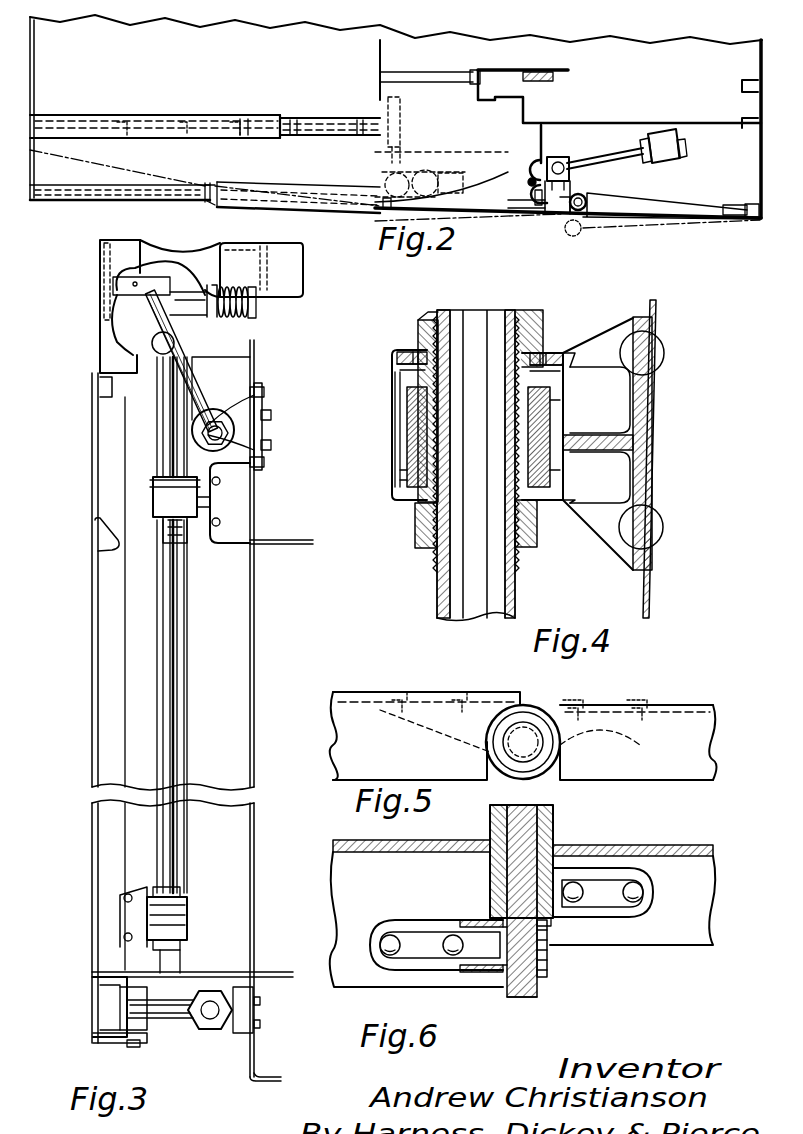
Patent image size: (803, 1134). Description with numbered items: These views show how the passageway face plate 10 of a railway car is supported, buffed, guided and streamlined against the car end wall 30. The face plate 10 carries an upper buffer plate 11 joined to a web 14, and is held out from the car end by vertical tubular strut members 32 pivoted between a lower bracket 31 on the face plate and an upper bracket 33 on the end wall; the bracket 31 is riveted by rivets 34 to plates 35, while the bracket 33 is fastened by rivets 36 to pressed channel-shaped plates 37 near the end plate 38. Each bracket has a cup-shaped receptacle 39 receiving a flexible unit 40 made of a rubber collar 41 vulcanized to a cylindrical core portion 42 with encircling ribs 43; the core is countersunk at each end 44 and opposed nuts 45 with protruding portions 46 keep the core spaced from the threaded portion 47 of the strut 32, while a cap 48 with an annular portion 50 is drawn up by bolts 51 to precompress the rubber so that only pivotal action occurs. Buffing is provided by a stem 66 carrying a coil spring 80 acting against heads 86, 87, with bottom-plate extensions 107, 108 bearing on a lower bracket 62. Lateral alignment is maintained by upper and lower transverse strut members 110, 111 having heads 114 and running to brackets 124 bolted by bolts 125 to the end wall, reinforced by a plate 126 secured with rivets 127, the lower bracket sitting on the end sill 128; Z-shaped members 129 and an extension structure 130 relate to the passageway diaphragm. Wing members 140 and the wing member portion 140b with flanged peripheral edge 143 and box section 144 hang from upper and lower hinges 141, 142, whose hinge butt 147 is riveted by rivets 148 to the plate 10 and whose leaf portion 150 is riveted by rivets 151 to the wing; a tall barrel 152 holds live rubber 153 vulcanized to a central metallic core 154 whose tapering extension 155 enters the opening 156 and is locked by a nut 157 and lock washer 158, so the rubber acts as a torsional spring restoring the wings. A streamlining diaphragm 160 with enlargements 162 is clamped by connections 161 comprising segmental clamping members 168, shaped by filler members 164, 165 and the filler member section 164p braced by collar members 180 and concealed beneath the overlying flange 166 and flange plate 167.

In FIG. 5, the face plate 10 is at (333, 742).
In FIG. 6, the face plate 10 is at (333, 881).
In FIG. 2, the buffer plate 11 is at (322, 214).
In FIG. 2, the web 14 is at (488, 213).
In FIG. 2, the car end wall 30 is at (559, 126).
In FIG. 3, the car end wall 30 is at (252, 346).
In FIG. 3, the bracket 31 is at (188, 915).
In FIG. 2, the tubular strut member 32 is at (570, 170).
In FIG. 3, the tubular strut member 32 is at (167, 656).
In FIG. 4, the tubular strut member 32 is at (436, 600).
In FIG. 3, the bracket 33 is at (153, 497).
In FIG. 3, the rivets 34 is at (121, 955).
In FIG. 3, the plates 35 is at (120, 916).
In FIG. 3, the rivets 36 is at (216, 521).
In FIG. 4, the rivets 36 is at (662, 368).
In FIG. 3, the pressed channel-shaped plates 37 is at (254, 501).
In FIG. 4, the pressed channel-shaped plates 37 is at (652, 597).
In FIG. 3, the end plate 38 is at (276, 542).
In FIG. 2, the cup-shaped receptacle 39 is at (662, 164).
In FIG. 4, the cup-shaped receptacle 39 is at (394, 440).
In FIG. 4, the flexible unit 40 is at (394, 481).
In FIG. 4, the collar of flexible material 41 is at (408, 410).
In FIG. 4, the cylindrical core portion 42 is at (398, 356).
In FIG. 4, the encircling ribs 43 is at (394, 461).
In FIG. 4, the countersunk end 44 is at (424, 334).
In FIG. 4, the nuts 45 is at (536, 323).
In FIG. 4, the protruding portions 46 is at (537, 362).
In FIG. 4, the threaded portion 47 is at (520, 465).
In FIG. 4, the metal washer or cap 48 is at (564, 364).
In FIG. 4, the projecting annular portion 50 is at (409, 379).
In FIG. 4, the bolts 51 is at (414, 351).
In FIG. 2, the bracket 62 is at (408, 173).
In FIG. 3, the bracket 62 is at (97, 994).
In FIG. 2, the stem 66 is at (402, 129).
In FIG. 3, the coil spring 80 is at (242, 322).
In FIG. 3, the head 86 is at (185, 306).
In FIG. 2, the head 87 is at (382, 162).
In FIG. 3, the extension 107 is at (117, 322).
In FIG. 3, the extension 108 is at (105, 1044).
In FIG. 3, the upper transverse tubular strut member 110 is at (184, 375).
In FIG. 2, the lower transverse tubular strut member 111 is at (621, 160).
In FIG. 3, the lower transverse tubular strut member 111 is at (170, 1021).
In FIG. 2, the head 114 is at (442, 173).
In FIG. 2, the bracket 124 is at (640, 131).
In FIG. 2, the bolts 125 is at (517, 164).
In FIG. 3, the bolts 125 is at (271, 441).
In FIG. 2, the plate 126 is at (452, 96).
In FIG. 3, the plate 126 is at (258, 390).
In FIG. 3, the rivets 127 is at (265, 393).
In FIG. 3, the end sill 128 is at (268, 1078).
In FIG. 2, the Z-shaped members 129 is at (552, 214).
In FIG. 3, the extension structure 130 is at (215, 610).
In FIG. 2, the wing members 140 is at (142, 202).
In FIG. 5, the wing members 140 is at (712, 716).
In FIG. 6, the wing members 140 is at (713, 886).
In FIG. 2, the ramp 140b is at (656, 212).
In FIG. 2, the upper hinges 141 is at (208, 201).
In FIG. 2, the lower hinges 142 is at (581, 236).
In FIG. 2, the peripheral edge 143 is at (760, 224).
In FIG. 2, the box section 144 is at (742, 210).
In FIG. 3, the box section 144 is at (125, 545).
In FIG. 5, the hinge butt 147 is at (456, 740).
In FIG. 6, the hinge butt 147 is at (425, 919).
In FIG. 6, the rivets 148 is at (390, 952).
In FIG. 5, the leaf portion 150 is at (674, 712).
In FIG. 6, the leaf portion 150 is at (598, 918).
In FIG. 5, the rivets 151 is at (590, 733).
In FIG. 6, the rivets 151 is at (632, 888).
In FIG. 6, the barrel 152 is at (555, 824).
In FIG. 5, the live rubber 153 is at (532, 770).
In FIG. 5, the central metallic core 154 is at (524, 740).
In FIG. 6, the central metallic core 154 is at (494, 835).
In FIG. 6, the tapering depending integral extension 155 is at (548, 956).
In FIG. 6, the complemental opening 156 is at (507, 948).
In FIG. 6, the nut 157 is at (538, 991).
In FIG. 6, the lock washer 158 is at (505, 968).
In FIG. 2, the streamlining diaphragm 160 is at (60, 172).
In FIG. 3, the streamlining diaphragm 160 is at (166, 256).
In FIG. 2, the connections 161 is at (752, 215).
In FIG. 2, the enlargements 162 is at (292, 136).
In FIG. 2, the filler member 164 is at (268, 201).
In FIG. 2, the rail section 164p is at (90, 199).
In FIG. 2, the filler member 165 is at (312, 128).
In FIG. 2, the overlying flange 166 is at (335, 203).
In FIG. 3, the overlying flange 166 is at (96, 257).
In FIG. 2, the overhanging flange plate 167 is at (77, 132).
In FIG. 3, the overhanging flange plate 167 is at (240, 256).
In FIG. 2, the segmental clamping members 168 is at (304, 192).
In FIG. 2, the collar members 180 is at (243, 121).